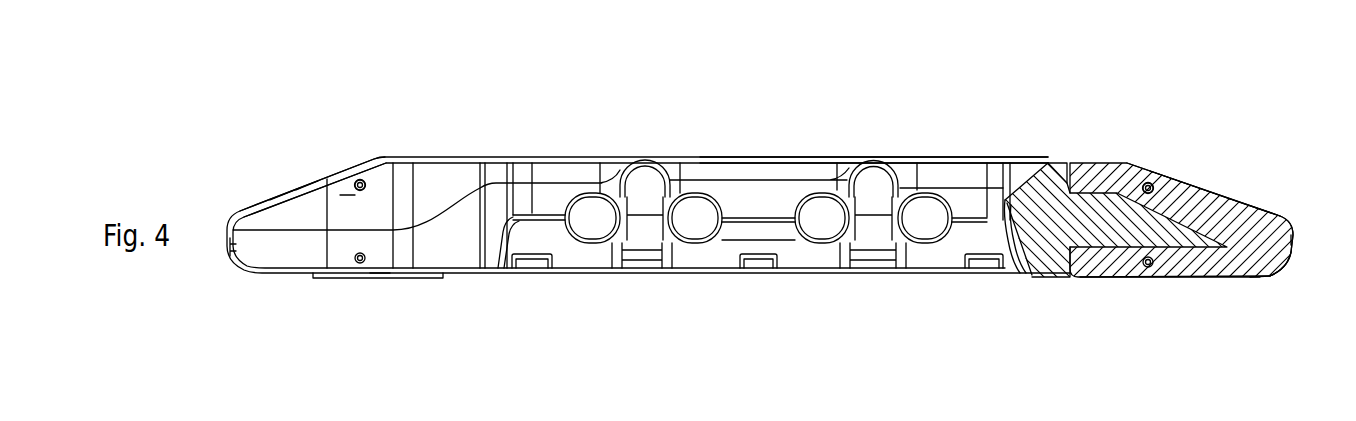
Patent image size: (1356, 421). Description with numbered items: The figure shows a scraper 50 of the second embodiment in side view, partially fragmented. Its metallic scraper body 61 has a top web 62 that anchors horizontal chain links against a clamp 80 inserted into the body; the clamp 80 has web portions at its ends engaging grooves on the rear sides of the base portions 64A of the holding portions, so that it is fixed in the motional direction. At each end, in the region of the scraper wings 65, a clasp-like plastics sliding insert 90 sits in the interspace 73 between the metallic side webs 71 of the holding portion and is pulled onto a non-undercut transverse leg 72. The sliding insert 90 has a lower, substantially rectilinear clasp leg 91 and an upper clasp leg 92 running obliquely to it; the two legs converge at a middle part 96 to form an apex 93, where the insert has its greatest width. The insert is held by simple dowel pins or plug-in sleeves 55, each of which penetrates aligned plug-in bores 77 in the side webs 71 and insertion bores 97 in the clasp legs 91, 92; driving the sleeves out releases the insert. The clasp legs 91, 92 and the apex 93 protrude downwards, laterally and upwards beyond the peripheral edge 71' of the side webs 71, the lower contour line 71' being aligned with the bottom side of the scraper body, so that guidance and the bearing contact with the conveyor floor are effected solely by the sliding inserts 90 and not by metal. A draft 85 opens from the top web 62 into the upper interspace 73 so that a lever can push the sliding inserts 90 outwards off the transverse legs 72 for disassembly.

The scraper 50 is at (1082, 141).
The dowel pin or plug-in sleeve 55 is at (363, 178).
The scraper body 61 is at (833, 142).
The top web 62 is at (753, 193).
The base portion 64A is at (1047, 197).
The scraper wing 65 is at (316, 132).
The side web 71 is at (345, 125).
The peripheral edge or contour line 71' is at (303, 209).
The transverse leg 72 is at (1098, 230).
The interspace 73 is at (1191, 165).
The plug-in bore 77 is at (367, 183).
The clamp 80 is at (798, 255).
The draft 85 is at (1059, 163).
The sliding insert 90 is at (1262, 168).
The lower clasp leg 91 is at (342, 273).
The upper clasp leg 92 is at (303, 190).
The apex 93 is at (233, 253).
The middle part 96 is at (1267, 248).
The insertion bore 97 is at (1146, 183).